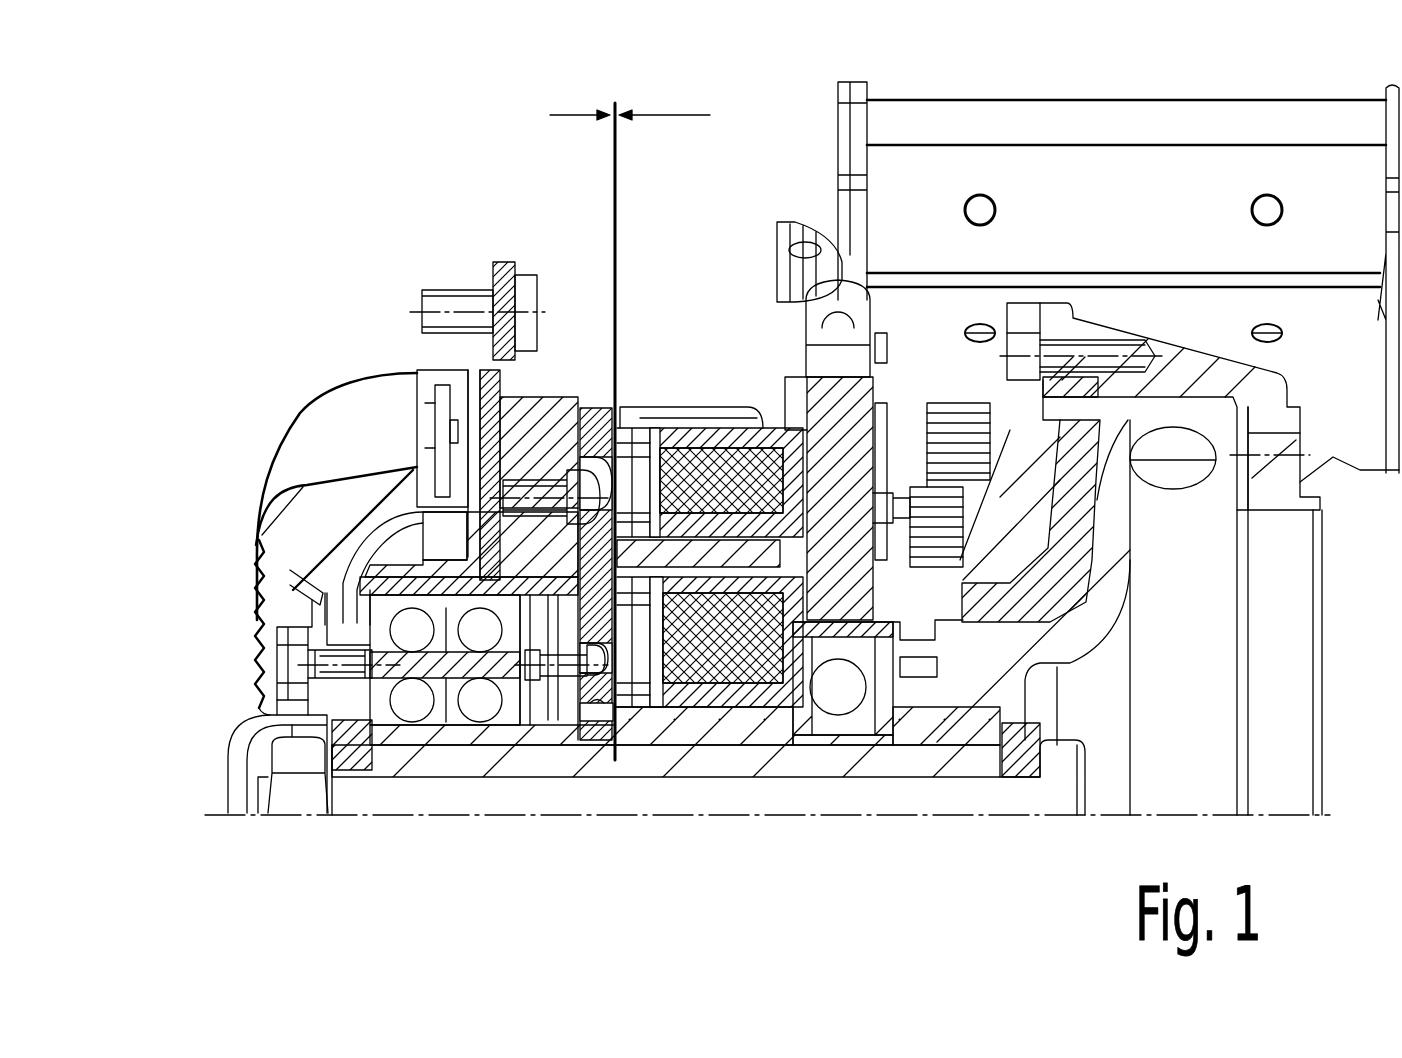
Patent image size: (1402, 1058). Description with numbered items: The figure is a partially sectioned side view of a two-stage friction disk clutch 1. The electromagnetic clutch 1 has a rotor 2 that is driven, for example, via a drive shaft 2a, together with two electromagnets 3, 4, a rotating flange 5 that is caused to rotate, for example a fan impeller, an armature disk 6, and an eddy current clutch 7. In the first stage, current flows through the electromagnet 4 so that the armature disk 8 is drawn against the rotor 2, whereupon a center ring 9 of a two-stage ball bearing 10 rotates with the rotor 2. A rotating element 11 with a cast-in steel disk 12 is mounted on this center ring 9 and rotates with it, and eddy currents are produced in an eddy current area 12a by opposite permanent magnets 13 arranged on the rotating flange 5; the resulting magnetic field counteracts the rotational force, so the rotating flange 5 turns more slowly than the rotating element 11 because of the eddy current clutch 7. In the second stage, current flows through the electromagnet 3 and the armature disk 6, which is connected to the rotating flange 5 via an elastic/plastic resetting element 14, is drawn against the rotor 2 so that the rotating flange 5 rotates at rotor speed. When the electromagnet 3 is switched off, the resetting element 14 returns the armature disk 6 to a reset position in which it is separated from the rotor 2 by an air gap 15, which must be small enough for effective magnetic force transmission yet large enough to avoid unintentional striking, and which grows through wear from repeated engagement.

The two-stage friction disk clutch 1 is at (565, 818).
The rotor 2 is at (645, 410).
The drive shaft 2a is at (950, 800).
The electromagnet 3 is at (690, 470).
The electromagnet 4 is at (705, 640).
The rotating flange 5 is at (525, 405).
The armature disk 6 is at (598, 420).
The eddy current clutch 7 is at (240, 667).
The armature disk 8 is at (597, 712).
The center ring 9 is at (452, 670).
The two-stage ball bearing 10 is at (392, 780).
The rotating element 11 is at (330, 417).
The steel disk 12 is at (352, 412).
The eddy current area 12a is at (443, 360).
The permanent magnets 13 is at (490, 365).
The resetting element 14 is at (552, 600).
The air gap 15 is at (678, 114).